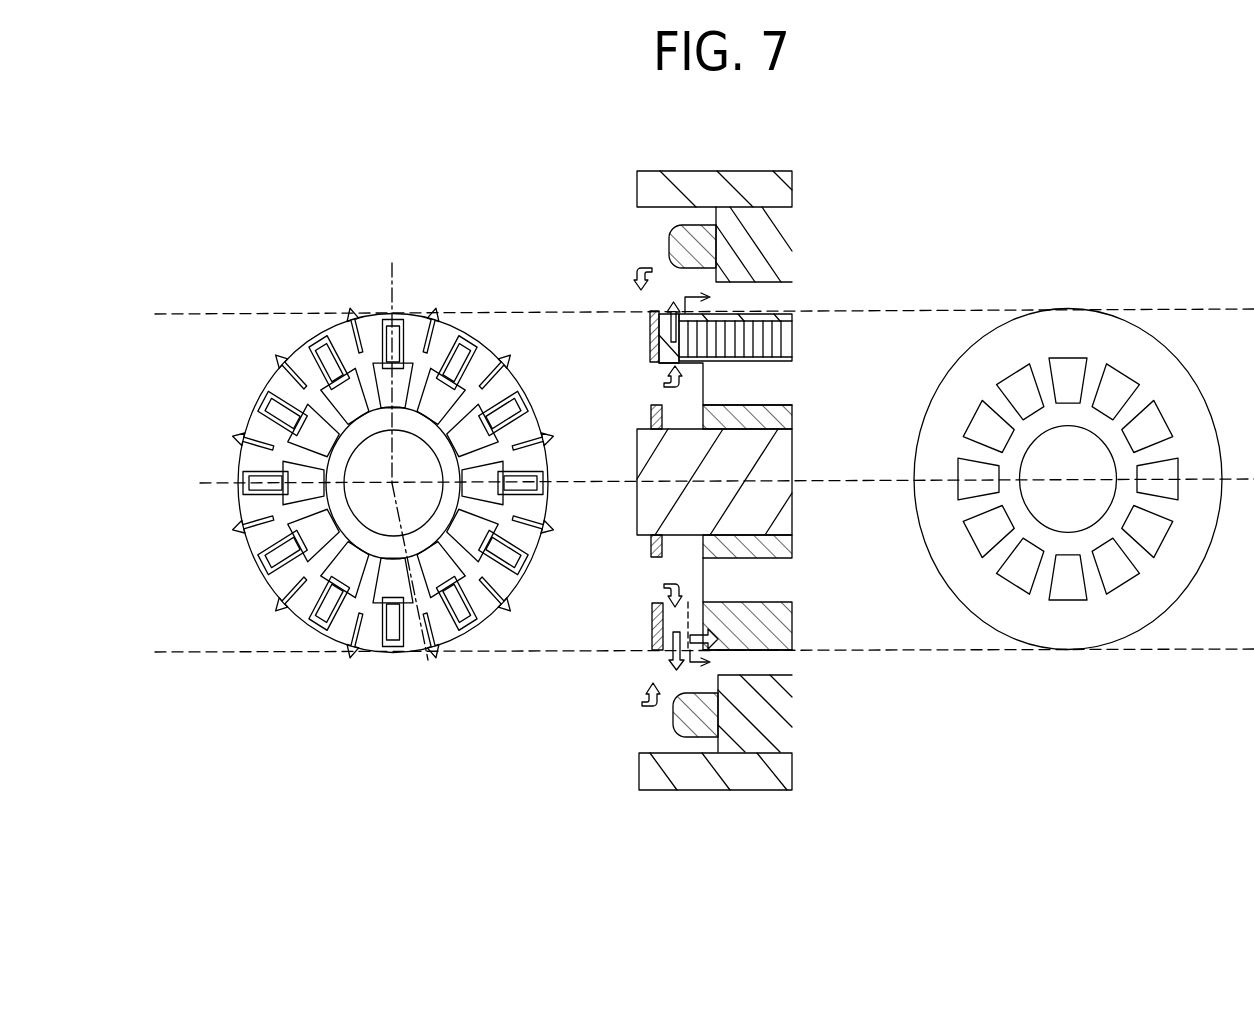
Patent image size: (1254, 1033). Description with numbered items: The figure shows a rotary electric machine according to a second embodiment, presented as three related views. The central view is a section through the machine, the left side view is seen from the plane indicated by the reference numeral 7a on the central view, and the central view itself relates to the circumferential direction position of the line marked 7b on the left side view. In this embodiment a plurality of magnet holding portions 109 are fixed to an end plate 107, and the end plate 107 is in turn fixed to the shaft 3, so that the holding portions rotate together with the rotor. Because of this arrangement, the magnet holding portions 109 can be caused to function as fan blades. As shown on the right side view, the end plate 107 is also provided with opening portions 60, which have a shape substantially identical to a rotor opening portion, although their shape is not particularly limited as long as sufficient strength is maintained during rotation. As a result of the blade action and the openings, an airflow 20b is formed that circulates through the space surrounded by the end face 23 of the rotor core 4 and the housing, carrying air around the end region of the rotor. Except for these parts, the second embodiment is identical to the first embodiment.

The airflow 20b is at (672, 312).
The plane of view 7a is at (714, 490).
The circumferential position line 7b is at (403, 490).
The magnet holding portion 109 is at (650, 352).
The end plate 107 is at (652, 627).
The shaft 3 is at (767, 458).
The rotor core 4 is at (770, 630).
The end face 23 is at (720, 652).
The opening portion 60 is at (981, 533).